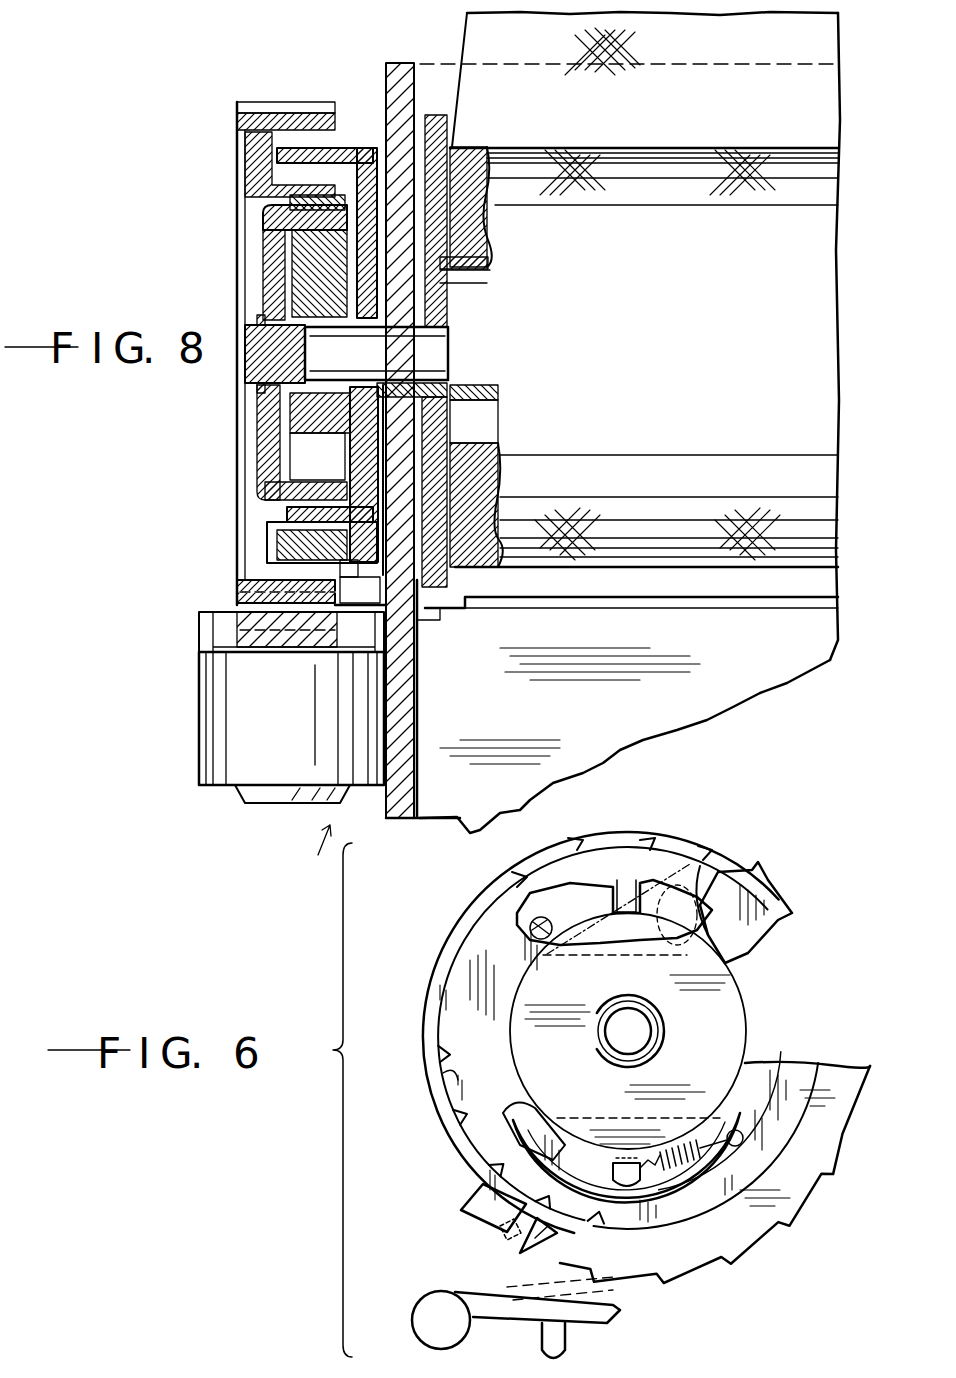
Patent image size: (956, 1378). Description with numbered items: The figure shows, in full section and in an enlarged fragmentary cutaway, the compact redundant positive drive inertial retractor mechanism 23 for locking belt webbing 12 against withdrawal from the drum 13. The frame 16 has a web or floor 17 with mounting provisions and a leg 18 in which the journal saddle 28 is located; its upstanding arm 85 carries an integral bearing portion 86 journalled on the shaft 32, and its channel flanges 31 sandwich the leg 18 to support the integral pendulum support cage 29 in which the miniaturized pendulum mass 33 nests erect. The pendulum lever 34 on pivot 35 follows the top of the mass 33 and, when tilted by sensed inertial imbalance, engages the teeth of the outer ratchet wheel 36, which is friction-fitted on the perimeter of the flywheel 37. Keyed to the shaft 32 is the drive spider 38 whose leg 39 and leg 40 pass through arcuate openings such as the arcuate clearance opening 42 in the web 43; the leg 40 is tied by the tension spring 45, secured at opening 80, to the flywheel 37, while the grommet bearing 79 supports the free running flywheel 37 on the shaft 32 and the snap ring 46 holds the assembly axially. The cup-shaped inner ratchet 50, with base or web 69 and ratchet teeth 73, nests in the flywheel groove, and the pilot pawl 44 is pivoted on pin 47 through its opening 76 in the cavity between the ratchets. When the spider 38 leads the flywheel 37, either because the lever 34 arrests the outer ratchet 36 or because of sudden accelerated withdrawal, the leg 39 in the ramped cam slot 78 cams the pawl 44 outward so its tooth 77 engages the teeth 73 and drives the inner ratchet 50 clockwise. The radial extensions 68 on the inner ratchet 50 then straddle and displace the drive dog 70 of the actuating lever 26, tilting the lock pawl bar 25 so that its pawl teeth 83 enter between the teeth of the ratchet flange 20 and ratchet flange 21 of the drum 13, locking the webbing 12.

In FIG. 8, the belt webbing 12 is at (835, 120).
In FIG. 8, the drum 13 is at (866, 235).
In FIG. 8, the frame 16 is at (425, 818).
In FIG. 8, the web or floor 17 is at (745, 696).
In FIG. 8, the leg 18 is at (392, 90).
In FIG. 8, the ratchet flange 20 is at (434, 118).
In FIG. 8, the ratchet flange 21 is at (387, 480).
In FIG. 8, the positive drive mechanism 23 is at (173, 180).
In FIG. 6, the positive drive mechanism 23 is at (837, 885).
In FIG. 8, the lock pawl bar 25 is at (640, 600).
In FIG. 8, the actuating lever 26 is at (445, 600).
In FIG. 8, the journal saddle 28 is at (312, 853).
In FIG. 8, the pendulum support cage 29 is at (205, 770).
In FIG. 8, the channel flanges 31 is at (380, 790).
In FIG. 8, the shaft 32 is at (245, 358).
In FIG. 6, the shaft 32 is at (612, 1040).
In FIG. 8, the pendulum mass 33 is at (230, 648).
In FIG. 8, the pendulum lever 34 is at (255, 625).
In FIG. 6, the pendulum lever 34 is at (598, 1327).
In FIG. 8, the pivot 35 is at (200, 628).
In FIG. 6, the pivot 35 is at (422, 1306).
In FIG. 8, the outer ratchet wheel 36 is at (268, 105).
In FIG. 6, the outer ratchet wheel 36 is at (862, 1093).
In FIG. 8, the flywheel 37 is at (245, 183).
In FIG. 6, the flywheel 37 is at (797, 1063).
In FIG. 8, the drive spider 38 is at (265, 270).
In FIG. 8, the leg 39 is at (340, 203).
In FIG. 6, the leg 39 is at (603, 890).
In FIG. 6, the leg 40 is at (615, 1180).
In FIG. 6, the arcuate clearance opening 42 is at (552, 1125).
In FIG. 8, the web 43 is at (265, 462).
In FIG. 8, the pilot pawl 44 is at (283, 262).
In FIG. 6, the pilot pawl 44 is at (598, 875).
In FIG. 8, the tension spring 45 is at (322, 490).
In FIG. 6, the tension spring 45 is at (684, 1170).
In FIG. 8, the snap ring 46 is at (252, 400).
In FIG. 6, the snap ring 46 is at (655, 1010).
In FIG. 6, the pin 47 is at (530, 922).
In FIG. 8, the inner ratchet 50 is at (335, 152).
In FIG. 6, the inner ratchet 50 is at (755, 880).
In FIG. 8, the radial extensions 68 is at (377, 560).
In FIG. 6, the radial extensions 68 is at (462, 1205).
In FIG. 8, the base or web 69 is at (480, 287).
In FIG. 6, the drive dog 70 is at (505, 1232).
In FIG. 6, the ratchet teeth 73 is at (443, 1073).
In FIG. 6, the opening 76 is at (530, 947).
In FIG. 6, the tooth 77 is at (735, 870).
In FIG. 6, the ramped cam slot 78 is at (668, 880).
In FIG. 8, the grommet bearing 79 is at (298, 430).
In FIG. 6, the opening 80 is at (740, 1144).
In FIG. 8, the pawl teeth 83 is at (440, 622).
In FIG. 8, the upstanding arm 85 is at (390, 520).
In FIG. 8, the bearing portion 86 is at (430, 380).